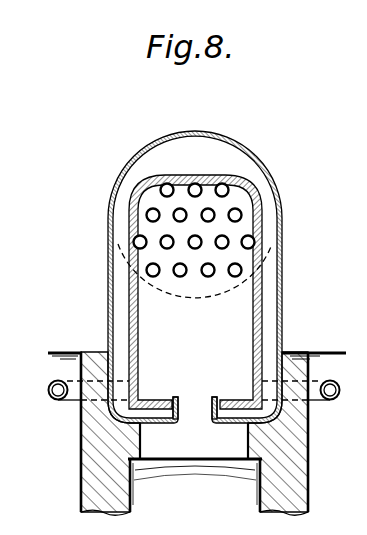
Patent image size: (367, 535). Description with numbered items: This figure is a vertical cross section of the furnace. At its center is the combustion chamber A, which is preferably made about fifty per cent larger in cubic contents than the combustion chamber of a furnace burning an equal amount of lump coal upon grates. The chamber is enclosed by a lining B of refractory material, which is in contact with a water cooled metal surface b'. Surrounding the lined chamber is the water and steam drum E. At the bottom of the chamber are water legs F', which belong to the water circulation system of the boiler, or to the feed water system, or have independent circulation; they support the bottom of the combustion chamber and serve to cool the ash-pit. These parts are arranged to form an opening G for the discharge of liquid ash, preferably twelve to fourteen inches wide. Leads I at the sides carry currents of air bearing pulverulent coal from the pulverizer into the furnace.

The water and steam drum E is at (195, 277).
The lining of the combustion chamber B is at (254, 344).
The water cooled metal surface b' is at (214, 229).
The combustion chamber A is at (190, 325).
The opening G is at (194, 410).
The water legs F' is at (186, 424).
The lead for currents of air bearing pulverulent coal I is at (50, 397).